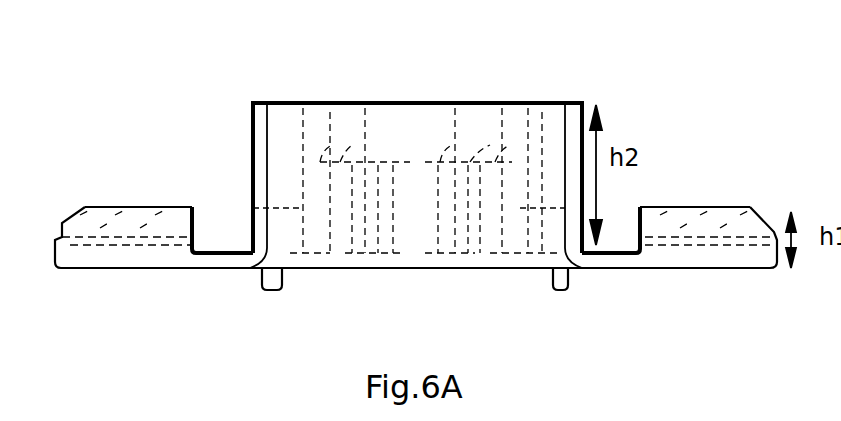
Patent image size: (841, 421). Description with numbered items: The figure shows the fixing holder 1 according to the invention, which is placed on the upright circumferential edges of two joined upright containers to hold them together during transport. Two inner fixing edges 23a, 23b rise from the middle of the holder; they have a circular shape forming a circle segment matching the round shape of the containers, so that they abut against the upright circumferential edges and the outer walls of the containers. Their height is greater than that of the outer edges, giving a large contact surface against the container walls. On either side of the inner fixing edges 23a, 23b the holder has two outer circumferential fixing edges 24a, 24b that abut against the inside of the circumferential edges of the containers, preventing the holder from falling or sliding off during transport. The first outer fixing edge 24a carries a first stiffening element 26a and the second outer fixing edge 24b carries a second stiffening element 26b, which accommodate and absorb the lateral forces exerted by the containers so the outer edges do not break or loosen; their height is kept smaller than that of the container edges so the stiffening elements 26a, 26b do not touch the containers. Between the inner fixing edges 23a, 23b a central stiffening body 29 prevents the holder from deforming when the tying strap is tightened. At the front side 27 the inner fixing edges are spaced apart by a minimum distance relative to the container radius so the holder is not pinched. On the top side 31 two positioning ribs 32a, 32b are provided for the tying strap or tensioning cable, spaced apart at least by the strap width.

The fixing holder 1 is at (90, 141).
The first inner fixing edge 23a is at (255, 104).
The second inner fixing edge 23b is at (573, 104).
The first outer fixing edge 24a is at (193, 217).
The second outer fixing edge 24b is at (637, 223).
The first stiffening element 26a is at (139, 247).
The second stiffening element 26b is at (725, 247).
The front side 27 is at (662, 408).
The central stiffening body 29 is at (396, 162).
The top side 31 is at (420, 268).
The first positioning rib 32a is at (273, 287).
The second positioning rib 32b is at (560, 287).